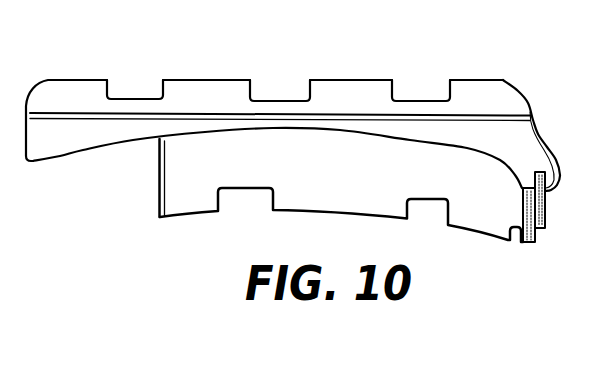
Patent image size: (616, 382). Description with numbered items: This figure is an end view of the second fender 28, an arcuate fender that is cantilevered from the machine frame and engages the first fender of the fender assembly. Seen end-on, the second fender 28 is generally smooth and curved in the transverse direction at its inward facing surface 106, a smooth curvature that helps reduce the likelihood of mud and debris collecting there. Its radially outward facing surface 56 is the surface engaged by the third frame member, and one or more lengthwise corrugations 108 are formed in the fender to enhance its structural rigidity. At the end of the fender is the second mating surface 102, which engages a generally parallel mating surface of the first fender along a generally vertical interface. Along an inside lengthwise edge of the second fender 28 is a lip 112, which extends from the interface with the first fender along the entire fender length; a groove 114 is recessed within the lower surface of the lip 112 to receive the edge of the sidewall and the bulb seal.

The second fender 28 is at (140, 243).
The radially outward facing surface 56 is at (263, 98).
The second mating surface 102 is at (508, 138).
The inward facing surface 106 is at (82, 151).
The lengthwise corrugations 108 is at (182, 80).
The lip 112 is at (545, 190).
The groove 114 is at (542, 218).